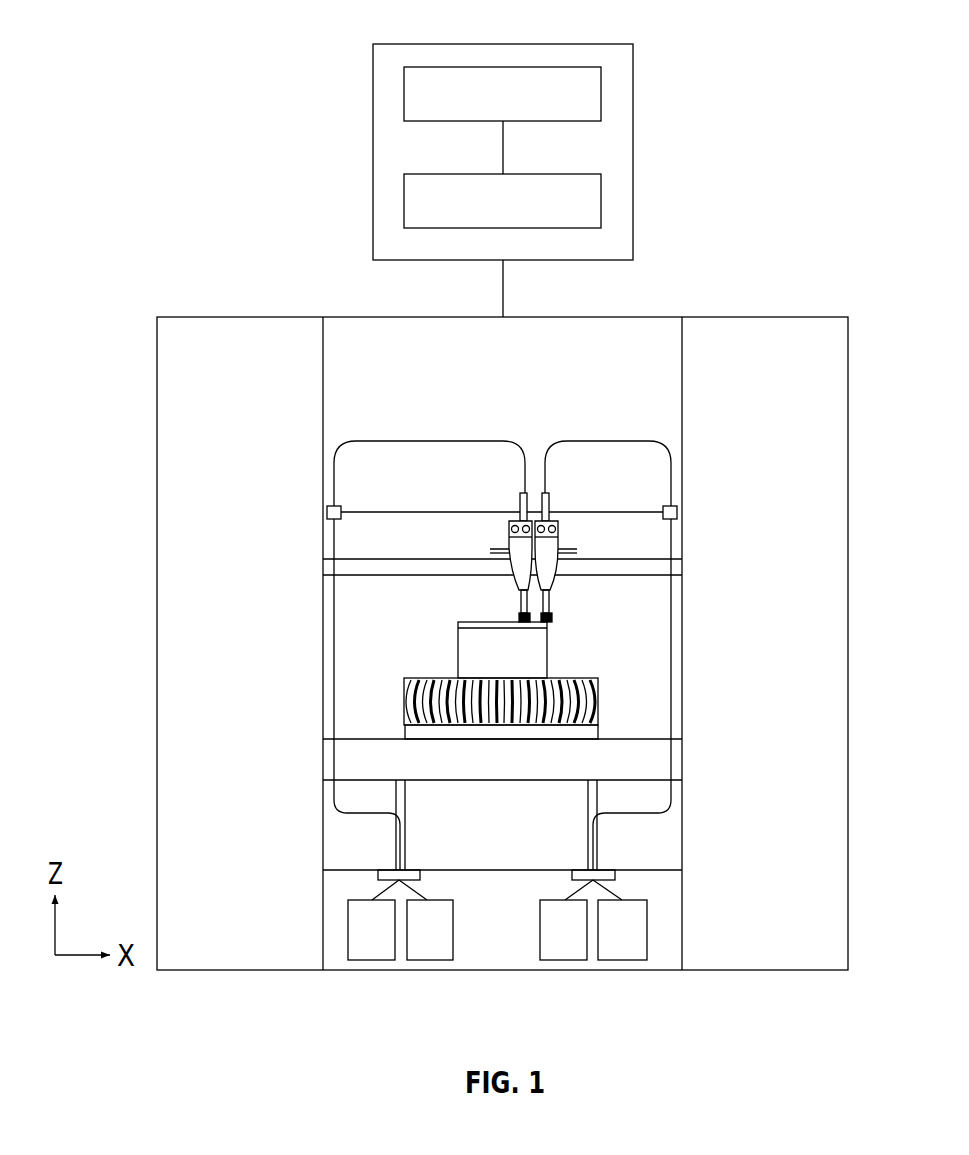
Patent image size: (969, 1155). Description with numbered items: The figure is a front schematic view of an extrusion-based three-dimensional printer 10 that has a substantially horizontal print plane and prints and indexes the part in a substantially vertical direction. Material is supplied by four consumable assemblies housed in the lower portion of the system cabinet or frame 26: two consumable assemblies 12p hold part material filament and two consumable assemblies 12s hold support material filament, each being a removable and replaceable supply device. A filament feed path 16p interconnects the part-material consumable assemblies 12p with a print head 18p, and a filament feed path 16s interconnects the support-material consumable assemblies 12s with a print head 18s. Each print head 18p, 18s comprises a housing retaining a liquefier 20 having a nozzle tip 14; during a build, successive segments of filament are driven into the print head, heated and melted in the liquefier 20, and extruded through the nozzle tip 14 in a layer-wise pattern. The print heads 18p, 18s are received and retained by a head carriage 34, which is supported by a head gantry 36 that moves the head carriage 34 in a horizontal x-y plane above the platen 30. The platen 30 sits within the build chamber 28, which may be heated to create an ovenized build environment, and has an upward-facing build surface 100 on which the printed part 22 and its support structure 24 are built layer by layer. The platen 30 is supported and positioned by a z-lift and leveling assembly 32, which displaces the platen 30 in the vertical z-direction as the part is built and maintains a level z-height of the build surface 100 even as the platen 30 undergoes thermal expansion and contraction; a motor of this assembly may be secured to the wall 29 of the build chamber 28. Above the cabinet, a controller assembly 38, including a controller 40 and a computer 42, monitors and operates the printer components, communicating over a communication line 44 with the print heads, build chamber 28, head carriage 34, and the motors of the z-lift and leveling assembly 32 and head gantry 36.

The 3D printer 10 is at (207, 105).
The consumable assembly for part material 12p is at (370, 960).
The consumable assembly for support material 12s is at (563, 960).
The nozzle tip 14 is at (523, 624).
The filament feed path 16p is at (478, 441).
The filament feed path 16s is at (613, 441).
The print head 18p is at (502, 542).
The print head 18s is at (566, 542).
The liquefier 20 is at (517, 607).
The 3D part 22 is at (458, 650).
The support structure 24 is at (600, 732).
The system cabinet or frame 26 is at (170, 695).
The build chamber 28 is at (320, 715).
The wall 29 is at (323, 651).
The platen 30 is at (685, 760).
The z-lift and leveling assembly 32 is at (600, 855).
The head carriage 34 is at (505, 552).
The head gantry 36 is at (417, 558).
The controller assembly 38 is at (430, 44).
The controller 40 is at (603, 203).
The computer 42 is at (603, 97).
The communication line 44 is at (503, 305).
The build surface 100 is at (377, 738).